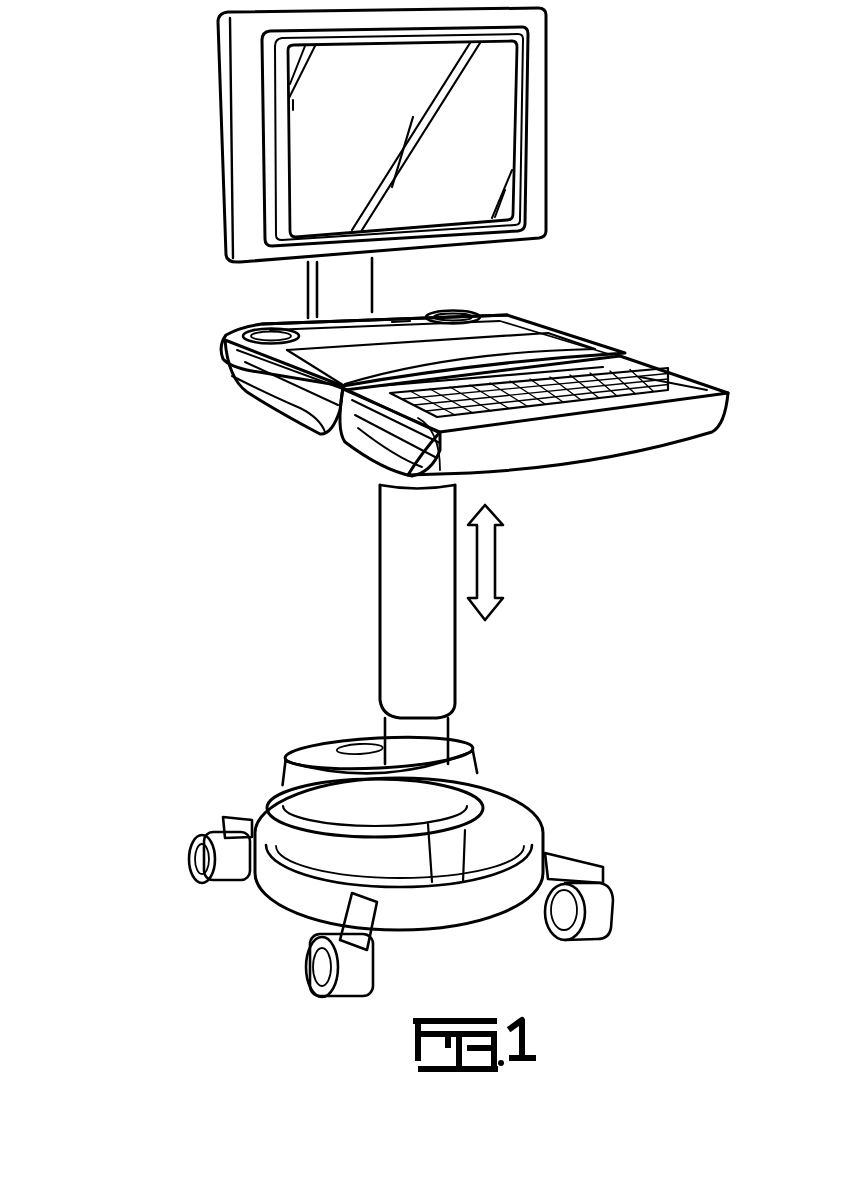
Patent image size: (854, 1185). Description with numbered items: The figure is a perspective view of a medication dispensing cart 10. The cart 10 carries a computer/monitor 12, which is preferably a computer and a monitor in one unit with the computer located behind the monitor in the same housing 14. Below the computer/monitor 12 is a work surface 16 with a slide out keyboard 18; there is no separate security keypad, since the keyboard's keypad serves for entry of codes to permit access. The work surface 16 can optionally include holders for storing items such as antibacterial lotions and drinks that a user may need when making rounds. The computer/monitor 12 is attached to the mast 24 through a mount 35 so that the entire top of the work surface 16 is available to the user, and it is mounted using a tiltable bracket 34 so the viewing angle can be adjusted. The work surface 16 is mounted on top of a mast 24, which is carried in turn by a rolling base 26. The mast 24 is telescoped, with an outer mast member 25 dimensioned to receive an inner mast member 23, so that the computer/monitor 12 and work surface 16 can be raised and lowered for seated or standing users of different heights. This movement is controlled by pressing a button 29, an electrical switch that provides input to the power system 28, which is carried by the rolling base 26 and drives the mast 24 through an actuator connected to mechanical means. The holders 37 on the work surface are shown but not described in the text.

The cart 10 is at (125, 346).
The computer/monitor 12 is at (445, 178).
The housing 14 is at (220, 193).
The work surface 16 is at (540, 348).
The slide out keyboard 18 is at (640, 383).
The inner mast member 23 is at (440, 738).
The mast 24 is at (480, 648).
The outer mast member 25 is at (388, 602).
The rolling base 26 is at (258, 794).
The power system 28 is at (310, 747).
The button 29 is at (408, 316).
The tiltable bracket 34 is at (370, 457).
The mount 35 is at (307, 288).
The cup holder 37 is at (463, 312).